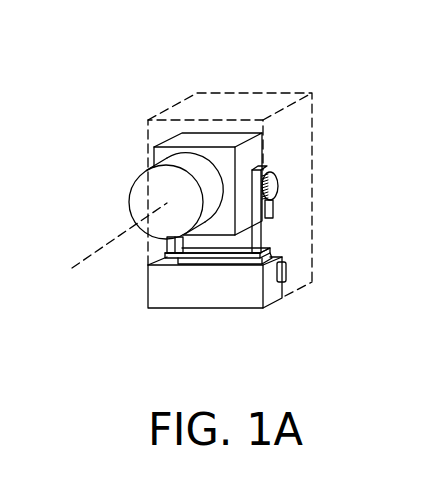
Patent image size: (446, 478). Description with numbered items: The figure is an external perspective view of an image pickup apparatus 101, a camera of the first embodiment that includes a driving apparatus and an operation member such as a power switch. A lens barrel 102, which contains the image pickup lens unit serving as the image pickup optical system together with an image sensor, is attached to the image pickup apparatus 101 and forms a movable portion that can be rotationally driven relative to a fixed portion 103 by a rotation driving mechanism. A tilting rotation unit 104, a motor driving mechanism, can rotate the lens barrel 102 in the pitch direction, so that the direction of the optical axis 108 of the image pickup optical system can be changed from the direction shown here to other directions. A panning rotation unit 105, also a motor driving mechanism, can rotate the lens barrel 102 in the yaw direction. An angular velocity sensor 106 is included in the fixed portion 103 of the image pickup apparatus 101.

The image pickup apparatus 101 is at (318, 82).
The lens barrel 102 is at (173, 140).
The fixed portion 103 is at (147, 287).
The tilting rotation unit 104 is at (278, 198).
The panning rotation unit 105 is at (205, 267).
The angular velocity sensor 106 is at (287, 265).
The optical axis 108 is at (85, 252).